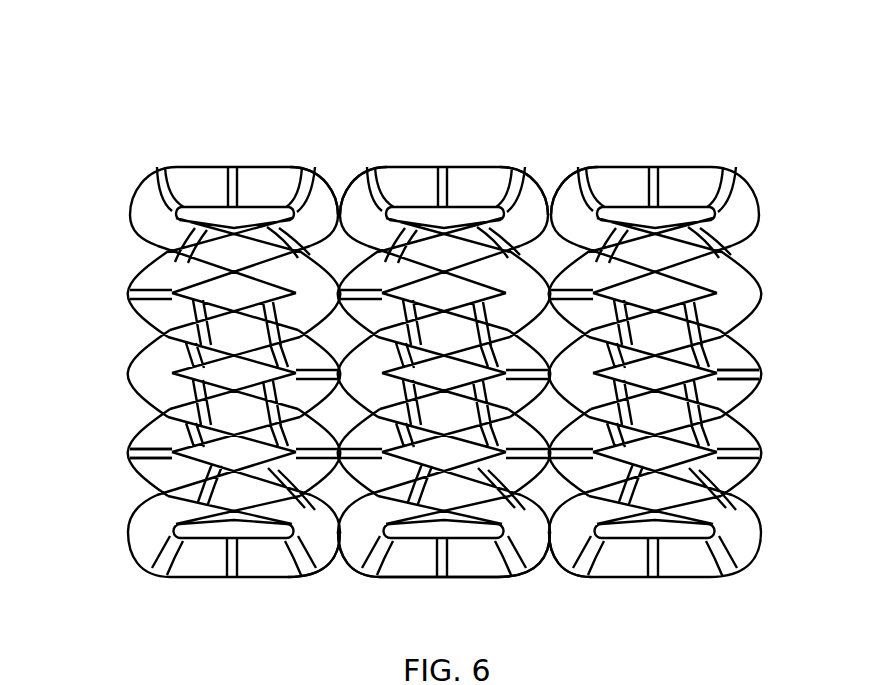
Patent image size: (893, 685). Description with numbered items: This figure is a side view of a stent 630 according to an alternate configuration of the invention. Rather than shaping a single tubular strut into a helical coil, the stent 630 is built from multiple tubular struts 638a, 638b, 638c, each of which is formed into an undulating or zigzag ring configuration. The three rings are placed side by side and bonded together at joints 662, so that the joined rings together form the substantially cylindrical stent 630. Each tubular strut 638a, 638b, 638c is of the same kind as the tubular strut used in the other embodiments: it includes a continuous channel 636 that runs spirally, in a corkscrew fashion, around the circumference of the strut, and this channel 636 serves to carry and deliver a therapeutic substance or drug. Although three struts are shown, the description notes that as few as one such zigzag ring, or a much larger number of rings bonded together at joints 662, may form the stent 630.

The stent 630 is at (444, 340).
The tubular strut 638a is at (221, 160).
The tubular strut 638b is at (431, 160).
The tubular strut 638c is at (645, 160).
The joints 662 is at (342, 190).
The continuous channel 636 is at (134, 457).